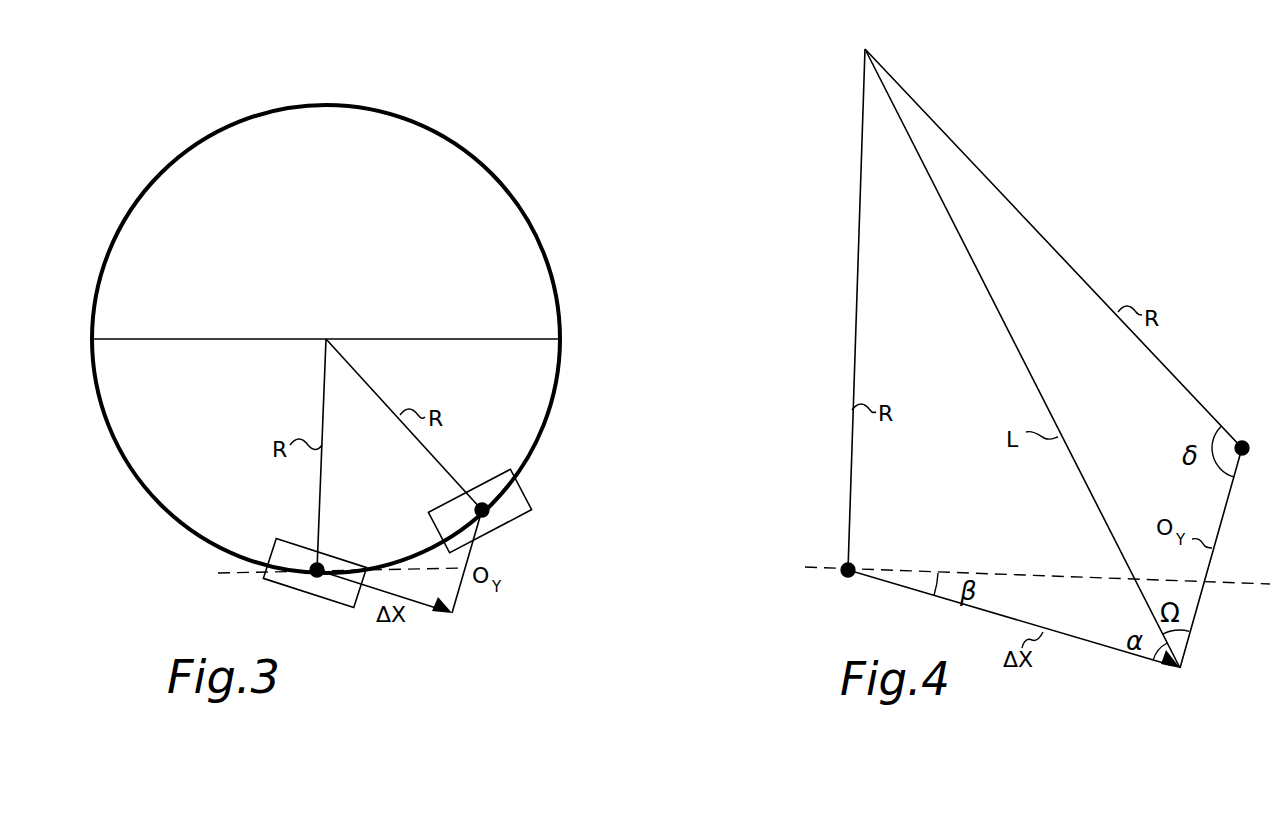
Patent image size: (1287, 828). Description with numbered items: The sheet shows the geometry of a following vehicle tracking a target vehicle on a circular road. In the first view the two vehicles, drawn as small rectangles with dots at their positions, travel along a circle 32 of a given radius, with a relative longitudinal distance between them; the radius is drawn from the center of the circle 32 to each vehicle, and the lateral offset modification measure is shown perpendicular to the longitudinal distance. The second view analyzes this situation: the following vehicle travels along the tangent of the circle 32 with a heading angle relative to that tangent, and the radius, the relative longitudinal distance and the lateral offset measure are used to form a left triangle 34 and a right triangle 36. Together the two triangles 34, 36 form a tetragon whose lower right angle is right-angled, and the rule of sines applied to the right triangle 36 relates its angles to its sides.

In FIG. 3, the circle 32 is at (175, 170).
In FIG. 4, the left triangle 34 is at (1014, 358).
In FIG. 4, the right triangle 36 is at (1053, 358).